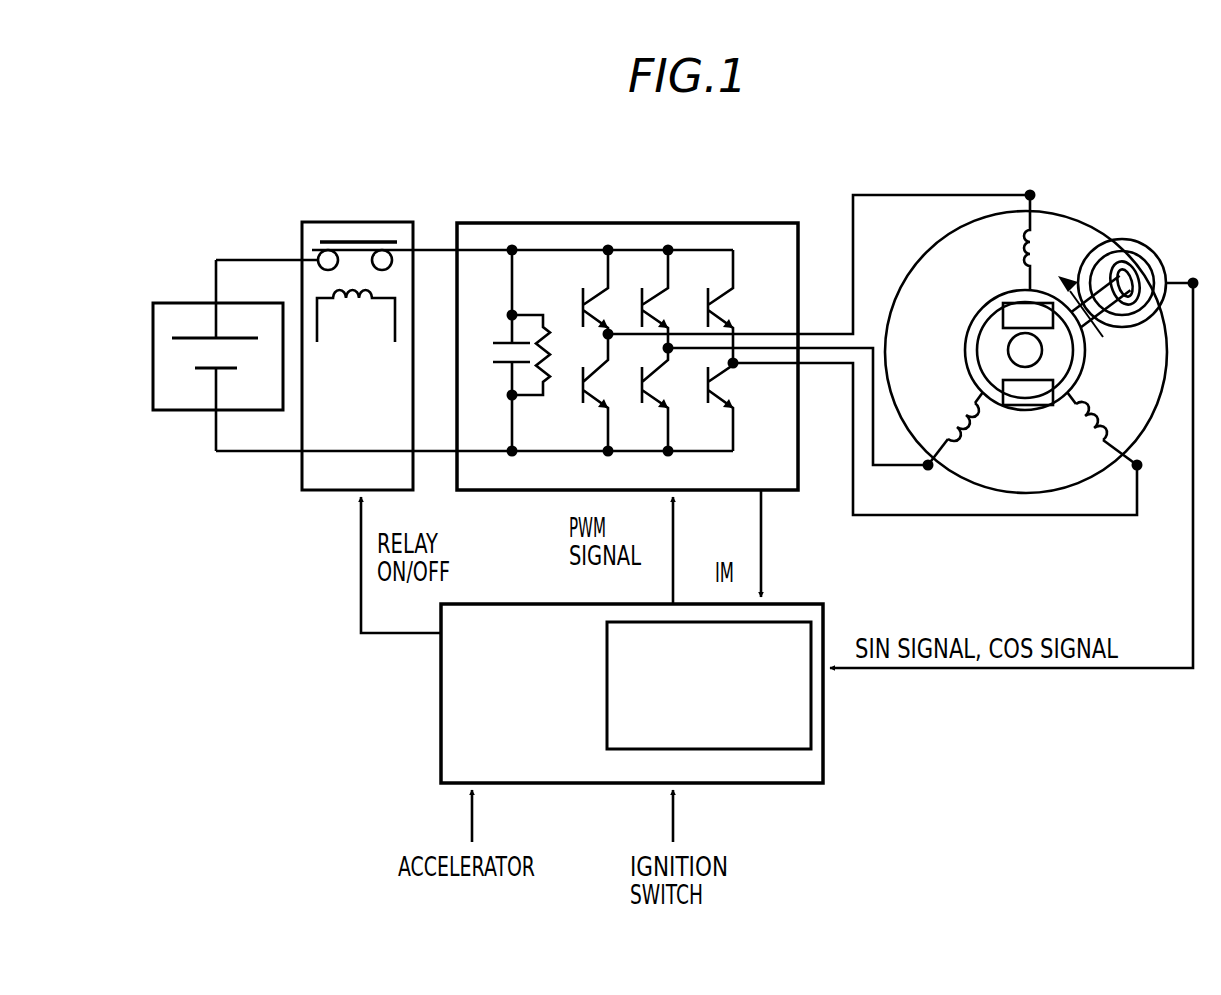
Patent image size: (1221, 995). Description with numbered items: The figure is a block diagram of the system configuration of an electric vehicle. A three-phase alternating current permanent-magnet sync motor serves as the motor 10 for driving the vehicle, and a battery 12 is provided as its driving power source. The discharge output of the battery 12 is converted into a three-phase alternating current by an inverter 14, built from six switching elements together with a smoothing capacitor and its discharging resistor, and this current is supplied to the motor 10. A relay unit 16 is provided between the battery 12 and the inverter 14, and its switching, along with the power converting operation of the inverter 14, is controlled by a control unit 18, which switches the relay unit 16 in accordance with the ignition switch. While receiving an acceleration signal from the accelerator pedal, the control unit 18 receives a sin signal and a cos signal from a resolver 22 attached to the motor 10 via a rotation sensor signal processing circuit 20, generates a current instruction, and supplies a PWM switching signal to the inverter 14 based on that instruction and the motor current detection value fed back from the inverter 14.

The motor 10 is at (1018, 493).
The battery 12 is at (178, 412).
The inverter 14 is at (562, 222).
The relay unit 16 is at (347, 220).
The control unit 18 is at (441, 689).
The rotation sensor signal processing circuit 20 is at (823, 698).
The resolver 22 is at (1155, 248).